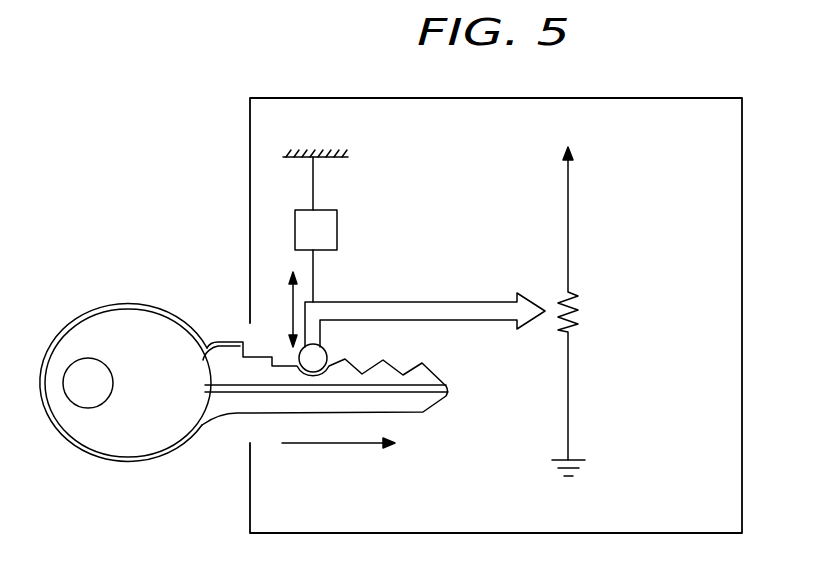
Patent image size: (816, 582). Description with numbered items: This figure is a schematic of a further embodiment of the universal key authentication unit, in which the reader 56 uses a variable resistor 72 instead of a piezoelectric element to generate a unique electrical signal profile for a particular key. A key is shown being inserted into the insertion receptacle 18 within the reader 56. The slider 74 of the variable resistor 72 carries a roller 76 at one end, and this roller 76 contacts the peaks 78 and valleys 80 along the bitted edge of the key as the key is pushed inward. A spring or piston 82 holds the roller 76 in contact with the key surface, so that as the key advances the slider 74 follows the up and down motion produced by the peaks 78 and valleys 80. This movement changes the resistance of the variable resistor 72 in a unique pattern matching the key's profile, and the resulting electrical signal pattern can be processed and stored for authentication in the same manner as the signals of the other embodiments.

The insertion receptacle 18 is at (243, 429).
The reader 56 is at (673, 98).
The variable resistor 72 is at (568, 225).
The slider 74 is at (430, 302).
The roller 76 is at (335, 352).
The peaks 78 is at (422, 363).
The valleys 80 is at (396, 360).
The spring or piston 82 is at (328, 241).